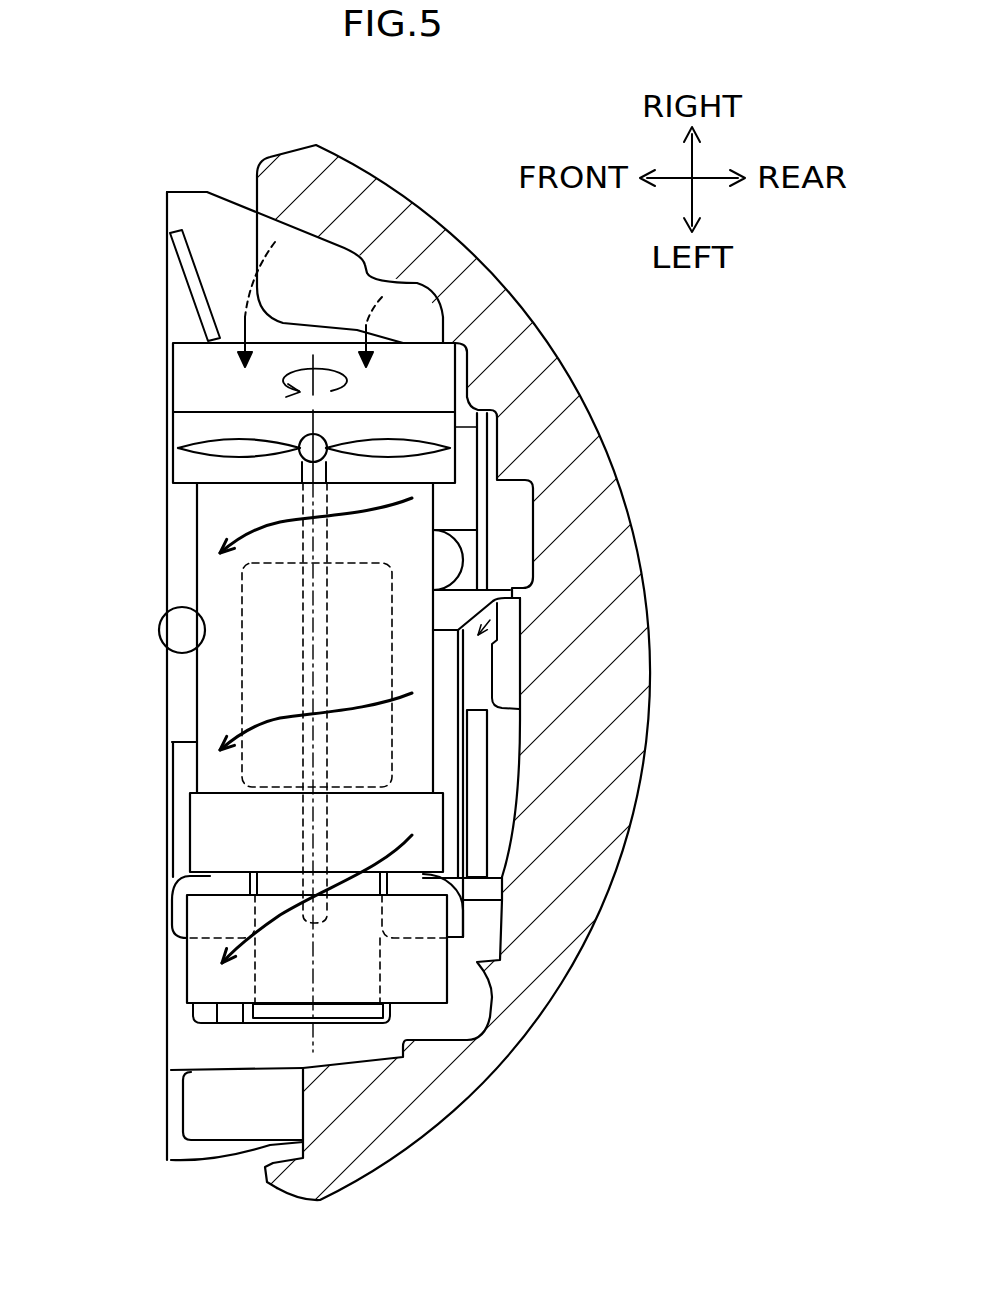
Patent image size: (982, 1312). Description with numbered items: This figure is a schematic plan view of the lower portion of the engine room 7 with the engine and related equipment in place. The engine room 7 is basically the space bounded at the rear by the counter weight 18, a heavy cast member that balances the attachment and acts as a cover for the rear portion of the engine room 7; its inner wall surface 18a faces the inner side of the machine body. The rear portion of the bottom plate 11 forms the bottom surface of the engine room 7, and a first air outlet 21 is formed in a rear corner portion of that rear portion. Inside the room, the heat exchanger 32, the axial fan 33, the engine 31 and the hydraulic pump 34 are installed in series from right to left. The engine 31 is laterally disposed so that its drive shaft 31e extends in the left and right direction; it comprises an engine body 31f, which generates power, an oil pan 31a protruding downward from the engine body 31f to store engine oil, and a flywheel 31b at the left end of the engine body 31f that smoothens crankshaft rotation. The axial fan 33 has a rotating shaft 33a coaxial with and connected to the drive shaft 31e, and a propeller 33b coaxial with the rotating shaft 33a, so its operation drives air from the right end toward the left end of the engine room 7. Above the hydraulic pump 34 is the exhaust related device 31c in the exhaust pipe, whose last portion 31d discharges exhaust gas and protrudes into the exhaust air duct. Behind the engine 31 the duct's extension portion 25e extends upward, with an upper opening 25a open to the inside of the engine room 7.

The engine room 7 is at (218, 233).
The bottom plate 11 is at (167, 305).
The counter weight 18 is at (537, 333).
The inner wall surface 18a is at (506, 740).
The first air outlet 21 is at (187, 1007).
The upper opening 25a is at (500, 600).
The extension portion 25e is at (462, 690).
The engine 31 is at (404, 732).
The oil pan 31a is at (240, 703).
The flywheel 31b is at (215, 833).
The exhaust related device 31c is at (187, 968).
The last portion 31d is at (478, 773).
The drive shaft 31e is at (300, 693).
The engine body 31f is at (208, 632).
The heat exchanger 32 is at (187, 380).
The axial fan 33 is at (274, 477).
The rotating shaft 33a is at (300, 465).
The propeller 33b is at (240, 463).
The hydraulic pump 34 is at (357, 1008).